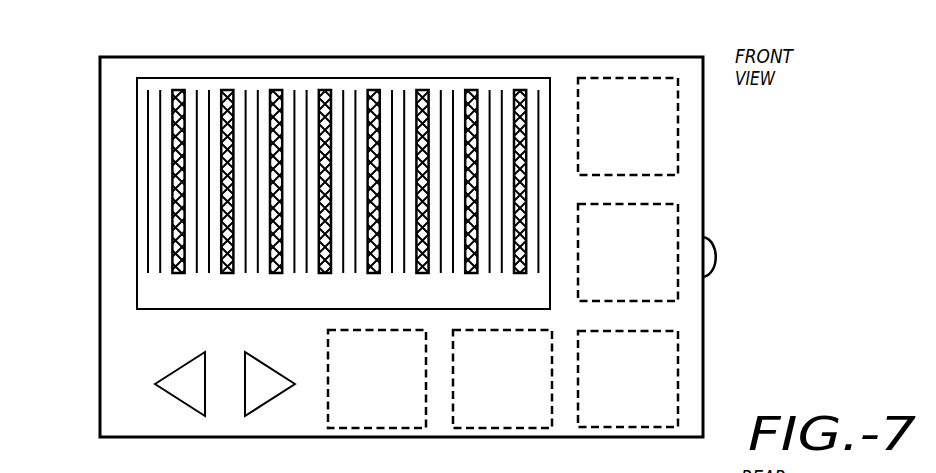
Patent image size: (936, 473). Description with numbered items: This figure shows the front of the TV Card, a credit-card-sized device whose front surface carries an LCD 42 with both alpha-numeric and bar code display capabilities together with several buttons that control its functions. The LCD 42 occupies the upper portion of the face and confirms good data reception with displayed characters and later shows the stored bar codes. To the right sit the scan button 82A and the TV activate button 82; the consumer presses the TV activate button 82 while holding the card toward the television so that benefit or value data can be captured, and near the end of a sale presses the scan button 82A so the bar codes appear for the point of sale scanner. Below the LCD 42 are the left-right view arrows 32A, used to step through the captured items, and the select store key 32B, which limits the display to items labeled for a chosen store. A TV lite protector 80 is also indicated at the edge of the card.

The LCD 42 is at (127, 107).
The scan button 82A is at (618, 95).
The TV activate button 82 is at (678, 379).
The TV lite protector 80 is at (720, 257).
The left-right view arrows 32A is at (215, 409).
The select store key 32B is at (360, 410).